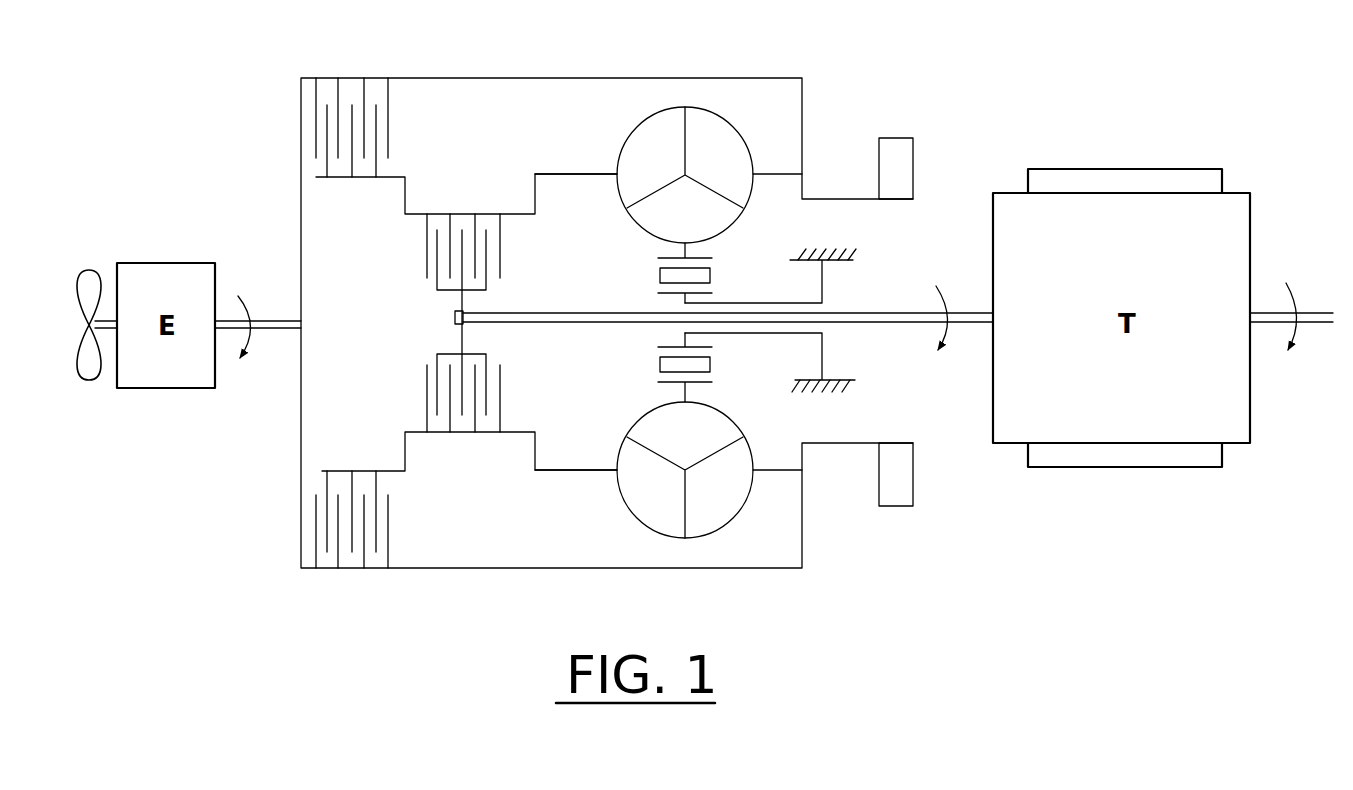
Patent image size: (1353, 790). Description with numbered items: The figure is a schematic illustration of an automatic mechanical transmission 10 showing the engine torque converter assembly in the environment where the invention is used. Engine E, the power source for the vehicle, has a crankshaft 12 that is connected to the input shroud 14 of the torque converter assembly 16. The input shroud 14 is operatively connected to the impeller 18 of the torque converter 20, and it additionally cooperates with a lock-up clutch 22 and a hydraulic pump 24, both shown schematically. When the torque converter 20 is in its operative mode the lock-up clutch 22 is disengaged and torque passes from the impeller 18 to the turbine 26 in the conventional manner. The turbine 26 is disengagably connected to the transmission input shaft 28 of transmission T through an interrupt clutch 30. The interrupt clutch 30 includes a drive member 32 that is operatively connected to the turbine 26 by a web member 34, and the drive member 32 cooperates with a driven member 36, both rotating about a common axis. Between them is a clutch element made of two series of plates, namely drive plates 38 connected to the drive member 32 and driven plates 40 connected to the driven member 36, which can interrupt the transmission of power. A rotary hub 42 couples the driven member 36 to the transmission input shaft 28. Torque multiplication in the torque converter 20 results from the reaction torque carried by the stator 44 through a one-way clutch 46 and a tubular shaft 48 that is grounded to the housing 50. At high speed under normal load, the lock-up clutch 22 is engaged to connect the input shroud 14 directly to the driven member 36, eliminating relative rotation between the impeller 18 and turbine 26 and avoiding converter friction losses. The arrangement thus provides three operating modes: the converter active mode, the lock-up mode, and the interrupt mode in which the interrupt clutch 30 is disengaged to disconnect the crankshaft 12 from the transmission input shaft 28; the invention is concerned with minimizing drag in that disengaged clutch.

The automatic mechanical transmission 10 is at (966, 82).
The crankshaft 12 is at (268, 318).
The input shroud 14 is at (525, 78).
The torque converter assembly 16 is at (672, 127).
The impeller 18 is at (729, 131).
The torque converter 20 is at (713, 108).
The lock-up clutch 22 is at (396, 100).
The hydraulic pump 24 is at (910, 146).
The turbine 26 is at (642, 136).
The transmission input shaft 28 is at (866, 322).
The interrupt clutch 30 is at (461, 218).
The drive member 32 is at (489, 412).
The web member 34 is at (586, 474).
The driven member 36 is at (484, 356).
The drive plates 38 is at (428, 243).
The driven plates 40 is at (492, 283).
The rotary hub 42 is at (455, 301).
The stator 44 is at (648, 231).
The one-way clutch 46 is at (658, 364).
The tubular shaft 48 is at (770, 335).
The housing 50 is at (845, 258).